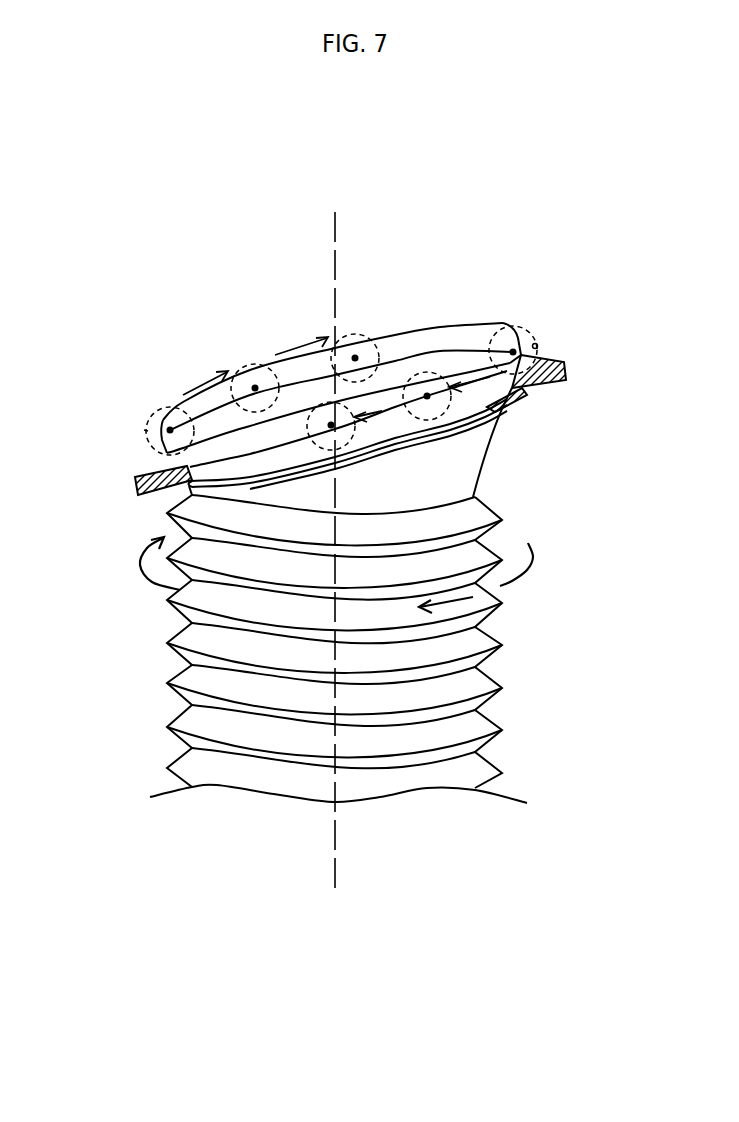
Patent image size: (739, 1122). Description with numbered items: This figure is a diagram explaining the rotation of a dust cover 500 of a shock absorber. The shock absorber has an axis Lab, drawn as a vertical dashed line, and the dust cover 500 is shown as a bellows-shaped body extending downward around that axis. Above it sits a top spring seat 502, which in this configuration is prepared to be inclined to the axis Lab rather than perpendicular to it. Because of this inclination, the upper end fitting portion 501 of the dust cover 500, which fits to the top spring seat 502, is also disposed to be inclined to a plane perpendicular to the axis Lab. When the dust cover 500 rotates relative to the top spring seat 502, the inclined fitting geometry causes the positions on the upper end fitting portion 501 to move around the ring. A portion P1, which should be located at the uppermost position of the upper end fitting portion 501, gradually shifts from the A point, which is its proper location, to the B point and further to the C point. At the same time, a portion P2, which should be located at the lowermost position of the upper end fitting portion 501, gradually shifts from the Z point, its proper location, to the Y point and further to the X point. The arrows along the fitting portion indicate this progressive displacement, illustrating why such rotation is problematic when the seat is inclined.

The dust cover 500 is at (508, 645).
The upper end fitting portion 501 is at (533, 407).
The top spring seat 502 is at (567, 370).
The axis of shock absorber Lab is at (334, 536).
The A point A is at (537, 344).
The B point B is at (427, 396).
The C point C is at (331, 425).
The X point X is at (355, 358).
The Y point Y is at (255, 388).
The Z point Z is at (170, 430).
The portion P1 is at (516, 338).
The portion P2 is at (144, 430).